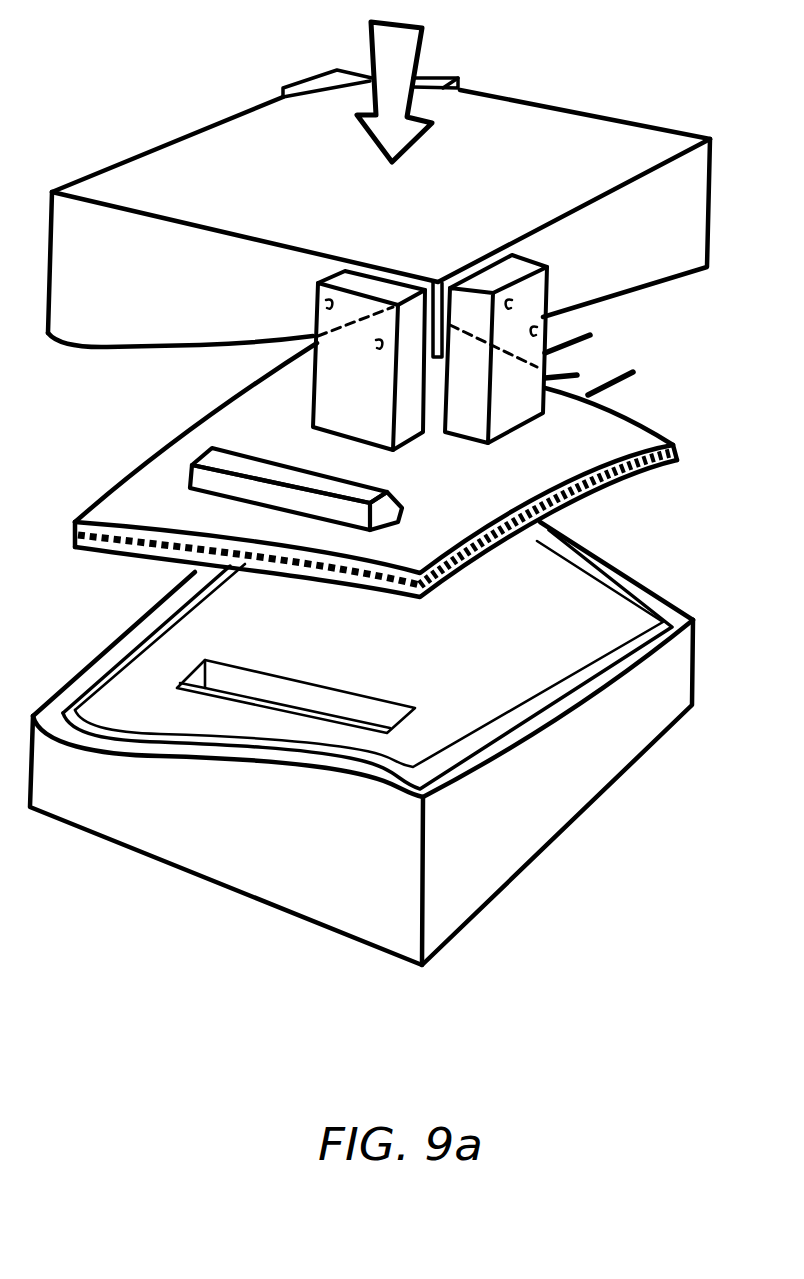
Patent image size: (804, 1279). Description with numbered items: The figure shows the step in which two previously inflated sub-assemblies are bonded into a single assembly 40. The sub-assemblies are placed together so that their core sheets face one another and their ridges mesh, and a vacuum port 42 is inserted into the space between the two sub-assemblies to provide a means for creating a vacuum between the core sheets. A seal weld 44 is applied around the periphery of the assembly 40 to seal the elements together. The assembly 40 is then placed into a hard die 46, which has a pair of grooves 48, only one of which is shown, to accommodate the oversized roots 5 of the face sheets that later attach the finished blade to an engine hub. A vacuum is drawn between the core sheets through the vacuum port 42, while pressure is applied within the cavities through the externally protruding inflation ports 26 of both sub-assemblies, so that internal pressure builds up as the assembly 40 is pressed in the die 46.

The hard die 46 is at (150, 165).
The inflation port 26 is at (593, 335).
The vacuum port 42 is at (577, 372).
The assembly 40 is at (130, 500).
The seal weld 44 is at (147, 562).
The root 5 is at (378, 492).
The groove 48 is at (257, 688).